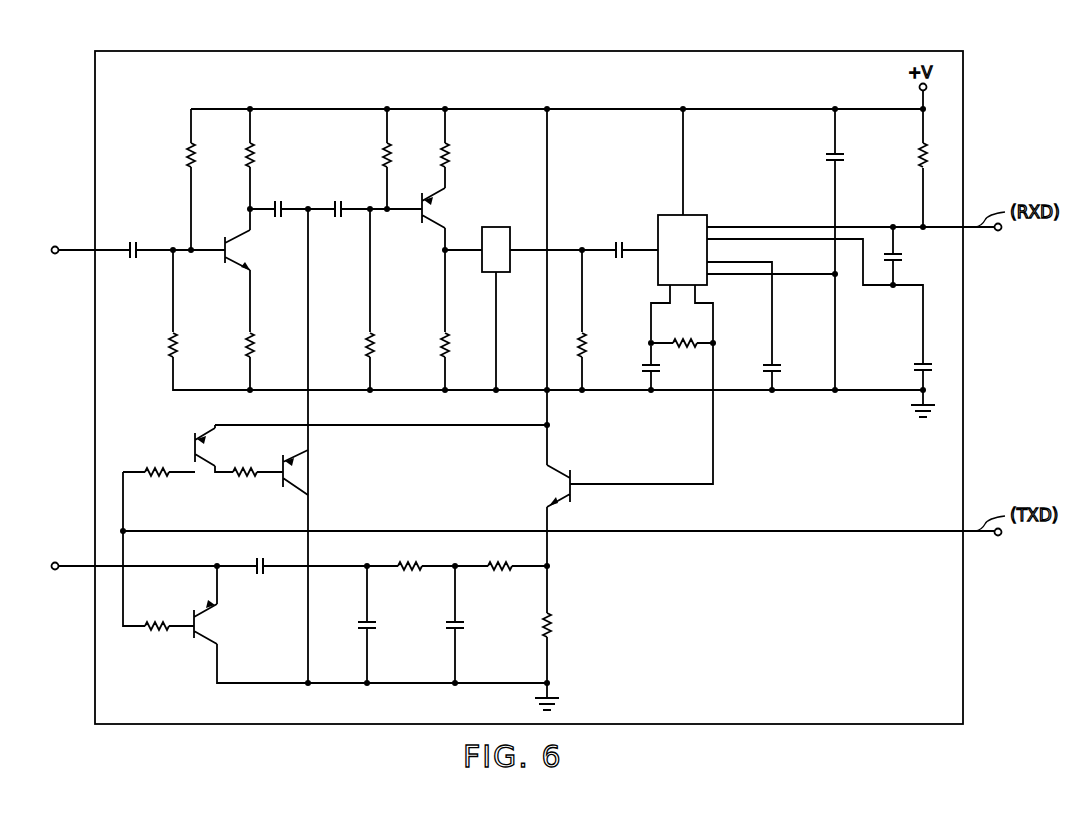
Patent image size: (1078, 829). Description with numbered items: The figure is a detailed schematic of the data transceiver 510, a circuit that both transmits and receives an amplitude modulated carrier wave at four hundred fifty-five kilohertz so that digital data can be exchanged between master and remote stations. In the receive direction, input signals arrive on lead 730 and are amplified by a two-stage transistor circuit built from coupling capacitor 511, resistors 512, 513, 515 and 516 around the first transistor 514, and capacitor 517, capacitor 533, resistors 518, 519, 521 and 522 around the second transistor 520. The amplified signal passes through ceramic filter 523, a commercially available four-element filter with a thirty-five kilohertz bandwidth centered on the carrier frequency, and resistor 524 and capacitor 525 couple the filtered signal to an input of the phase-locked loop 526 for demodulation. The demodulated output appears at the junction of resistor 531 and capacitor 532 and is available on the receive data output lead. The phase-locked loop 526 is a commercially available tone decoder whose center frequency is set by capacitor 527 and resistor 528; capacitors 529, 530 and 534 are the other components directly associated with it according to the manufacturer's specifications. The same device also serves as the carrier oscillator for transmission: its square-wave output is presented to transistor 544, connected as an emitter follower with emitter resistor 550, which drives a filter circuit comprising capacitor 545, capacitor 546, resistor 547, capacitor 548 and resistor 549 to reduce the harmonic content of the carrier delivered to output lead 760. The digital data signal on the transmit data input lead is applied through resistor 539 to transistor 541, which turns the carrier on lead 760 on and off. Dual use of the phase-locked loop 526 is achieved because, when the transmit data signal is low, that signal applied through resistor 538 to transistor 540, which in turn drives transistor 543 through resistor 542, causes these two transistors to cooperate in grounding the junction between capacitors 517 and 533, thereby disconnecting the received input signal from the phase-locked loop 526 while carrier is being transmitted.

The data transceiver 510 is at (640, 51).
The capacitor 511 is at (133, 240).
The resistor 512 is at (188, 157).
The resistor 513 is at (256, 155).
The transistor 514 is at (238, 250).
The resistor 515 is at (184, 343).
The resistor 516 is at (261, 343).
The capacitor 517 is at (278, 198).
The resistor 518 is at (378, 155).
The resistor 519 is at (381, 343).
The transistor 520 is at (430, 212).
The resistor 521 is at (452, 155).
The resistor 522 is at (456, 343).
The ceramic filter 523 is at (487, 226).
The resistor 524 is at (593, 343).
The capacitor 525 is at (619, 240).
The phase-locked loop 526 is at (694, 215).
The capacitor 527 is at (641, 370).
The resistor 528 is at (685, 338).
The capacitor 529 is at (824, 157).
The capacitor 530 is at (912, 362).
The resistor 531 is at (916, 157).
The capacitor 532 is at (904, 257).
The capacitor 533 is at (338, 198).
The capacitor 534 is at (783, 366).
The resistor 538 is at (157, 462).
The resistor 539 is at (157, 636).
The transistor 540 is at (208, 452).
The transistor 541 is at (208, 628).
The resistor 542 is at (245, 482).
The transistor 543 is at (298, 474).
The transistor 544 is at (556, 483).
The capacitor 545 is at (260, 576).
The capacitor 546 is at (378, 625).
The resistor 547 is at (410, 558).
The capacitor 548 is at (468, 625).
The resistor 549 is at (500, 574).
The resistor 550 is at (556, 625).
The input lead 730 is at (82, 249).
The output lead 760 is at (82, 565).